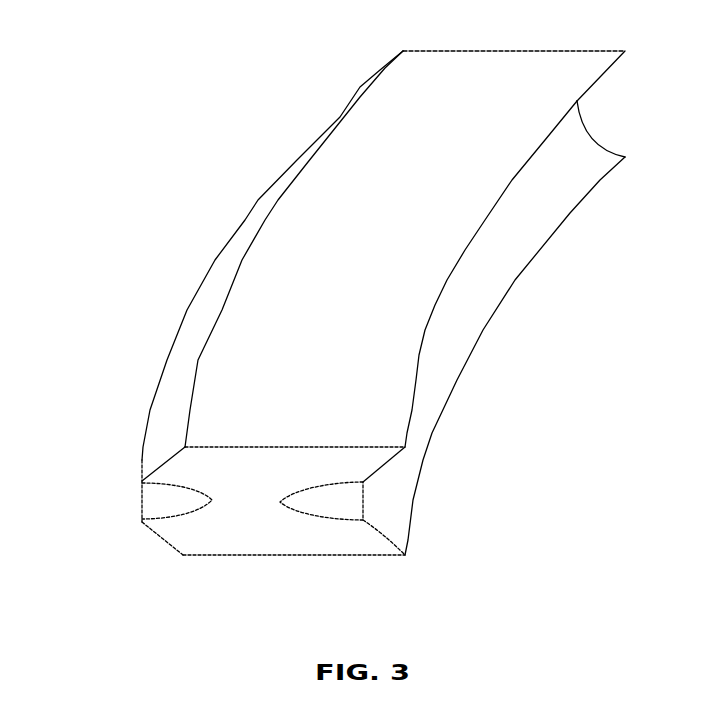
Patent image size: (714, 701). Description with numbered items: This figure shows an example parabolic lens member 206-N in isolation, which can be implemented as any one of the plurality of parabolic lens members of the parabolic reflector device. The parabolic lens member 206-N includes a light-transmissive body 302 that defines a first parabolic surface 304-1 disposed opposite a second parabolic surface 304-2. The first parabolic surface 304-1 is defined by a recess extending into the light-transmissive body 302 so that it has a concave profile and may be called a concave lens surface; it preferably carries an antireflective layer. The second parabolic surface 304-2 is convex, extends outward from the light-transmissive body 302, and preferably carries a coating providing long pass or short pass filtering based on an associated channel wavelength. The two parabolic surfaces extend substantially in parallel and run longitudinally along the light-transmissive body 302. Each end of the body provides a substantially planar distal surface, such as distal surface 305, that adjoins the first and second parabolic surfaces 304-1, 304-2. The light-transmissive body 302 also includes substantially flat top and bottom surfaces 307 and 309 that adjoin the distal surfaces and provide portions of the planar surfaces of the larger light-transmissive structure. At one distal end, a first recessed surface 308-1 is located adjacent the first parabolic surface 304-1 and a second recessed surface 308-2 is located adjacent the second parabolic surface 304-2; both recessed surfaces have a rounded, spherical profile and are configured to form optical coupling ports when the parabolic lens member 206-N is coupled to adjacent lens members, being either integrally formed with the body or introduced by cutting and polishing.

The parabolic lens member 206-N is at (225, 123).
The light-transmissive body 302 is at (328, 90).
The top surface 307 is at (345, 315).
The second parabolic surface 304-2 is at (193, 360).
The first parabolic surface 304-1 is at (427, 390).
The distal surface 305 is at (278, 532).
The bottom surface 309 is at (255, 560).
The second recessed surface 308-2 is at (163, 515).
The first recessed surface 308-1 is at (348, 509).